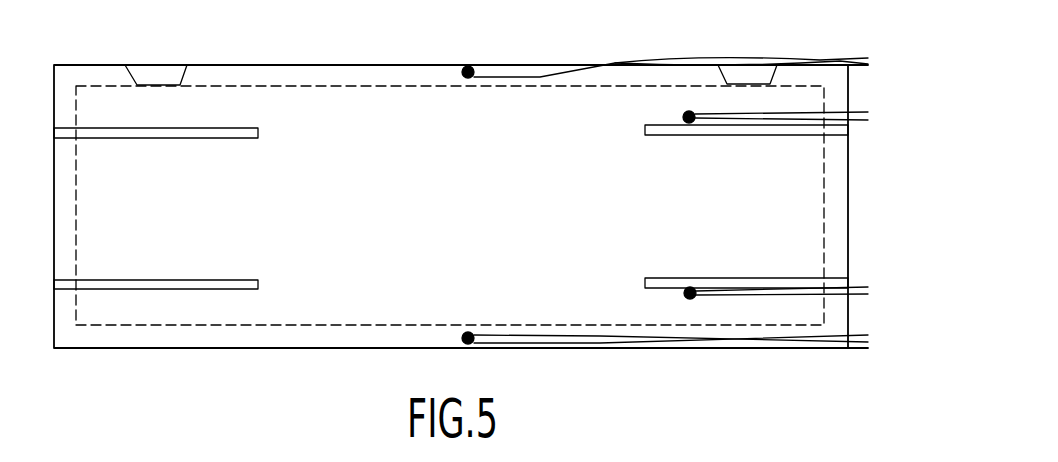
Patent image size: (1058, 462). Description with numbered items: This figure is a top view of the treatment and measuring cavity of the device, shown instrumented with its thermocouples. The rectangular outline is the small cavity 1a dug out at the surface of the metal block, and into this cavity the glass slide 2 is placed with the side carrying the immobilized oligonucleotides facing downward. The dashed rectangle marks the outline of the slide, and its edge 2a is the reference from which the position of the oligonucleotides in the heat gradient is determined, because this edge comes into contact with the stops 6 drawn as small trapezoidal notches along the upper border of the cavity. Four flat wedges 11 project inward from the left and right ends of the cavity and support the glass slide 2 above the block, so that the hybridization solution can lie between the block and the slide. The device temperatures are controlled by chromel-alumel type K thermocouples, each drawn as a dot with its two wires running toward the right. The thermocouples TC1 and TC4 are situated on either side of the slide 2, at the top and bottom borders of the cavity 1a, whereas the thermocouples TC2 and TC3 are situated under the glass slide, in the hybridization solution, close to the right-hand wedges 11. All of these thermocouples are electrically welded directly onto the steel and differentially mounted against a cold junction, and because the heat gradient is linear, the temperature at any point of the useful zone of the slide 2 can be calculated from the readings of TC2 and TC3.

The cavity 1a is at (459, 225).
The glass slide 2 is at (505, 127).
The edge of the slide 2a is at (275, 85).
The stops 6 is at (168, 75).
The wedges 11 is at (104, 132).
The thermocouple TC1 is at (658, 58).
The thermocouple TC2 is at (769, 106).
The thermocouple TC3 is at (771, 305).
The thermocouple TC4 is at (659, 354).